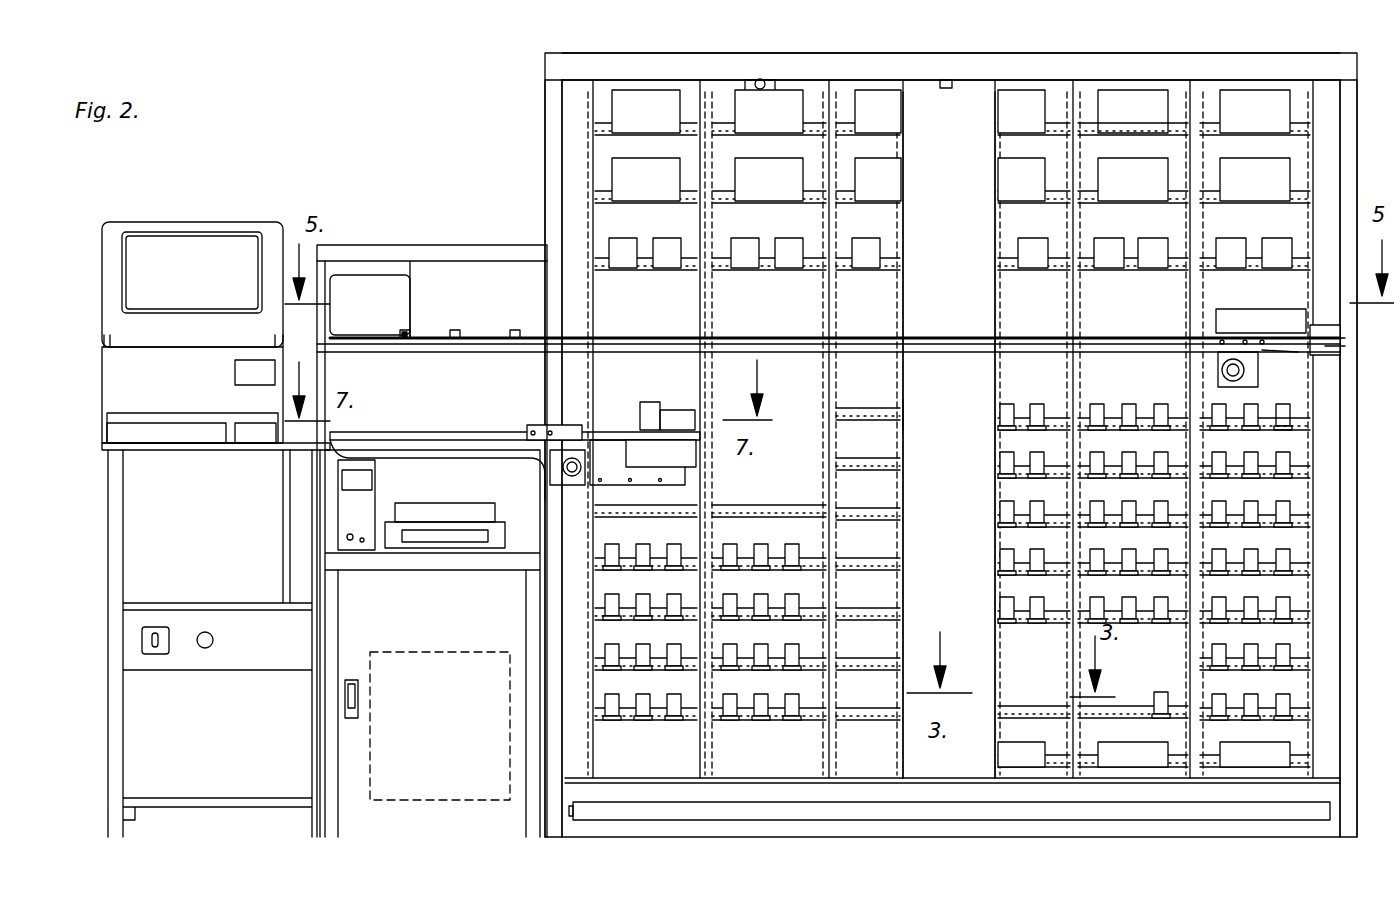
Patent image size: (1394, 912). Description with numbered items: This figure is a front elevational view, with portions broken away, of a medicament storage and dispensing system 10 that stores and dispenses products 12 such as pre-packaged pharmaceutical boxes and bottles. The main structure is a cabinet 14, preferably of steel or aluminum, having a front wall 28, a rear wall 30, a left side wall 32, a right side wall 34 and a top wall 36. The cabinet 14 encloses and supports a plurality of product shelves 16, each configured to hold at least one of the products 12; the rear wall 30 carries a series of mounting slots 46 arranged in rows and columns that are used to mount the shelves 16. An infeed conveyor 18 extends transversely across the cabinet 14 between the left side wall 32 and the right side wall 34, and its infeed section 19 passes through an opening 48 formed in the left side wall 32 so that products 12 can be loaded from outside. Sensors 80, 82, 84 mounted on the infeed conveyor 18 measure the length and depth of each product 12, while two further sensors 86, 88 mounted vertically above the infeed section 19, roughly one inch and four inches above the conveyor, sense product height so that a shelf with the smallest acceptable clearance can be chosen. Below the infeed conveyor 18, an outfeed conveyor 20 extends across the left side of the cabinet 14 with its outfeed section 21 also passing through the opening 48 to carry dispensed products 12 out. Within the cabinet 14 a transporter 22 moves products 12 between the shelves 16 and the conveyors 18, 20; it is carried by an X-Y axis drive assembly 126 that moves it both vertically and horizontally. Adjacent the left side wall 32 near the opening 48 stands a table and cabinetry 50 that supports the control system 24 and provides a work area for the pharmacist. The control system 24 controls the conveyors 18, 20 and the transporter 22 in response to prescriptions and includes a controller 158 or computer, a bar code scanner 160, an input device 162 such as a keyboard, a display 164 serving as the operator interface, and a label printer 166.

The medicament storage and dispensing system 10 is at (808, 44).
The products 12 is at (1116, 100).
The cabinet 14 is at (536, 58).
The product shelves 16 is at (898, 204).
The infeed conveyor 18 is at (522, 376).
The infeed section 19 is at (345, 333).
The outfeed conveyor 20 is at (527, 428).
The outfeed section 21 is at (372, 432).
The transporter 22 is at (949, 435).
The control system 24 is at (90, 300).
The front wall 28 is at (980, 825).
The rear wall 30 is at (872, 95).
The left side wall 32 is at (545, 150).
The right side wall 34 is at (1355, 570).
The top wall 36 is at (1026, 50).
The mounting slots 46 is at (700, 756).
The opening 48 is at (534, 307).
The table and cabinetry 50 is at (108, 515).
The sensor 80 is at (405, 338).
The sensor 82 is at (417, 345).
The sensor 84 is at (520, 345).
The sensor 86 is at (410, 333).
The sensor 88 is at (410, 290).
The X-Y axis drive assembly 126 is at (942, 415).
The controller 158 is at (415, 672).
The bar code scanner 160 is at (245, 372).
The input device 162 is at (250, 437).
The display 164 is at (190, 243).
The label printer 166 is at (355, 580).